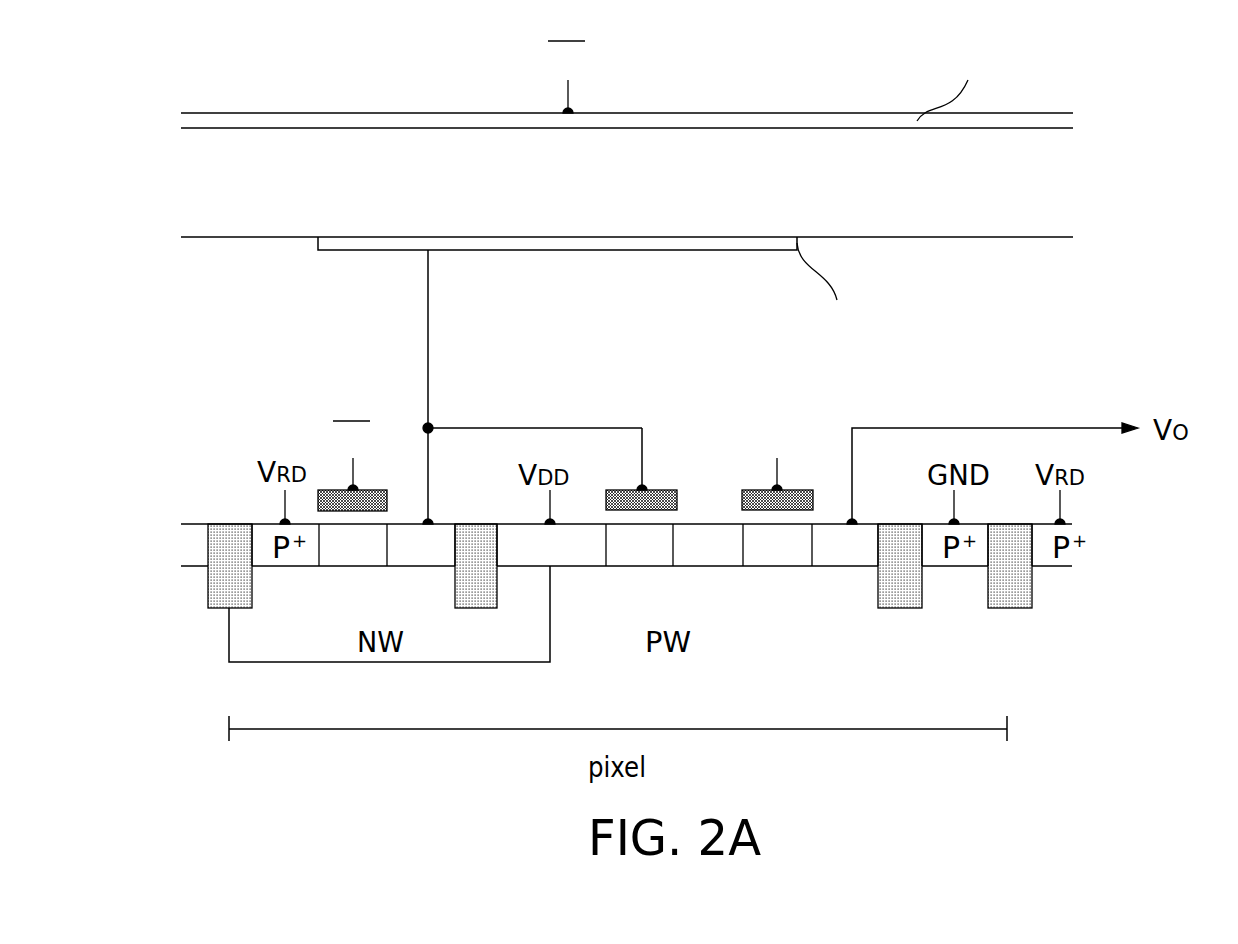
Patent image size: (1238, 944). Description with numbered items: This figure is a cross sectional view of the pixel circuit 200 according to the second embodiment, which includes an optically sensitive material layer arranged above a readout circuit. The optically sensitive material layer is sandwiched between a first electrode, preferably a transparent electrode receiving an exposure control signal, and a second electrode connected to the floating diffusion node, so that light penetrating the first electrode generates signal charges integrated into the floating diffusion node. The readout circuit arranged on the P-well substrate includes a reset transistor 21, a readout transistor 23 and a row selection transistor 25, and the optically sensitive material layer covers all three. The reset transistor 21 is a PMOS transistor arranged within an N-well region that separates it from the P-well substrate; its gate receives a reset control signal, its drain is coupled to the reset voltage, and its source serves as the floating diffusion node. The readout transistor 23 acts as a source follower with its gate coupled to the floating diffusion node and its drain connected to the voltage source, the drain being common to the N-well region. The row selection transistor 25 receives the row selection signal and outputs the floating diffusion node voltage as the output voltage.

The pixel circuit 200 is at (165, 80).
The reset transistor 21 is at (322, 412).
The readout transistor 23 is at (671, 437).
The row selection transistor 25 is at (738, 437).